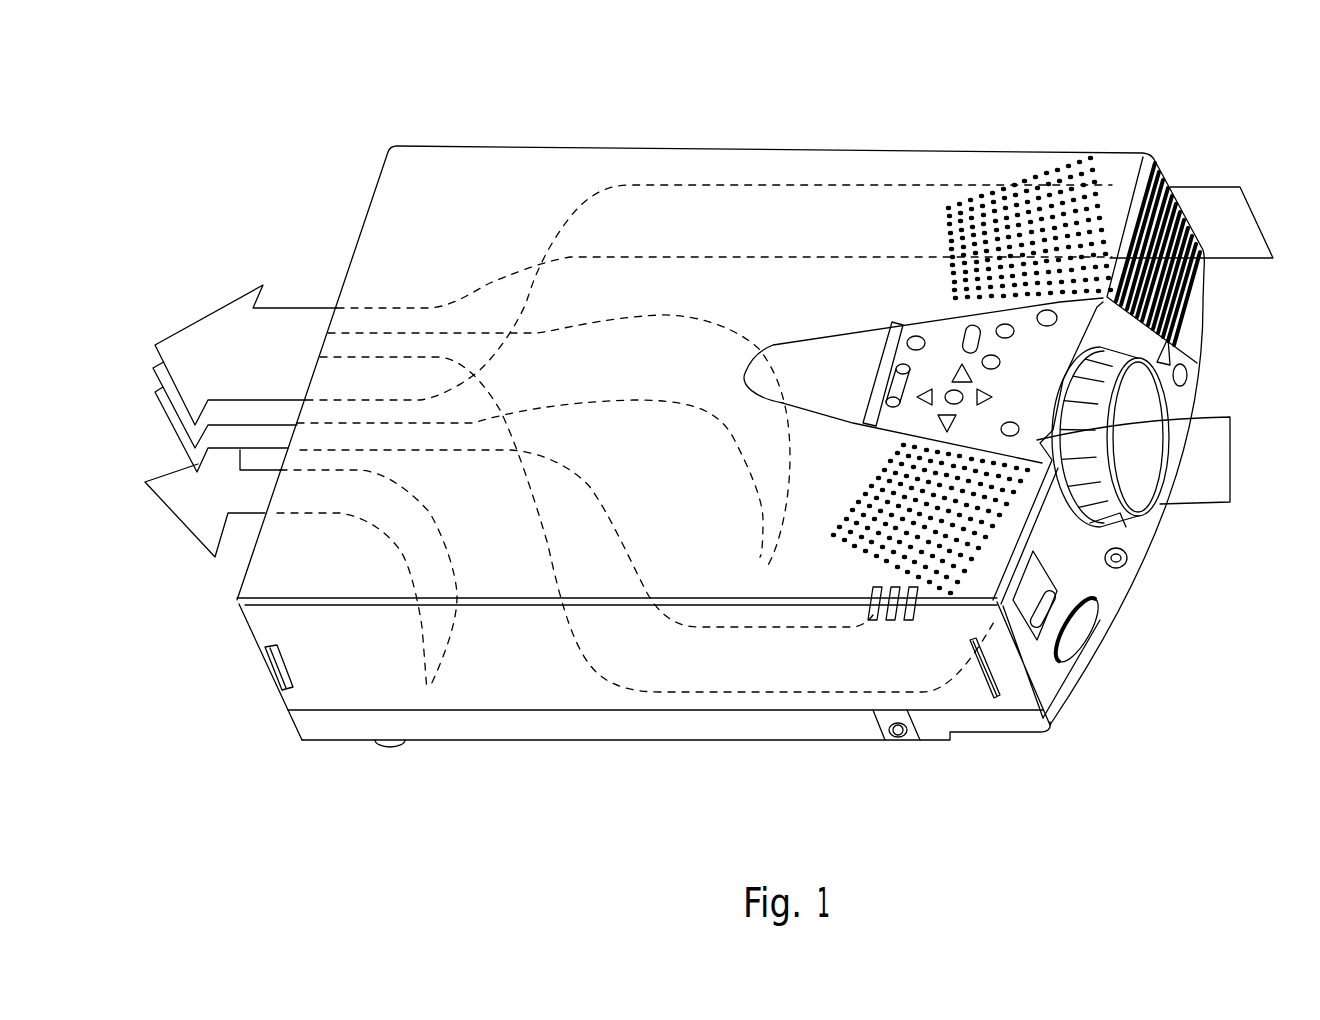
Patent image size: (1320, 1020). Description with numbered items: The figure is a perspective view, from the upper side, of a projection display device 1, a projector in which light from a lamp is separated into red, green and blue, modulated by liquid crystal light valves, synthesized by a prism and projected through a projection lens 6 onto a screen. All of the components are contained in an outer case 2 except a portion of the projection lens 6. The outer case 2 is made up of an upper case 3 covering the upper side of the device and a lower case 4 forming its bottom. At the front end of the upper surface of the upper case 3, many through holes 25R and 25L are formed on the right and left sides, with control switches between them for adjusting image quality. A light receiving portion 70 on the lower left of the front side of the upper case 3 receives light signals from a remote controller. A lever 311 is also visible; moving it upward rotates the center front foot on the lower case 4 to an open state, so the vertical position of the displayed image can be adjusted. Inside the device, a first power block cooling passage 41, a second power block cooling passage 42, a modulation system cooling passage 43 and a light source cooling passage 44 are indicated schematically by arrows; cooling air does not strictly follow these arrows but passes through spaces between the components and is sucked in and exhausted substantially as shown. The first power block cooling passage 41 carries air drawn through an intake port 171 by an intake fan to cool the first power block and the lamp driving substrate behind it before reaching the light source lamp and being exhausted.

The projection display device 1 is at (312, 206).
The outer case 2 is at (245, 702).
The upper case 3 is at (277, 620).
The lower case 4 is at (353, 720).
The projection lens 6 is at (1143, 477).
The through holes 25L is at (1033, 178).
The through holes 25R is at (873, 490).
The first power block cooling passage 41 is at (672, 192).
The second power block cooling passage 42 is at (743, 663).
The modulation system cooling passage 43 is at (670, 337).
The light source cooling passage 44 is at (400, 551).
The light receiving portion 70 is at (1077, 637).
The intake port 171 is at (1178, 216).
The lever 311 is at (1175, 366).